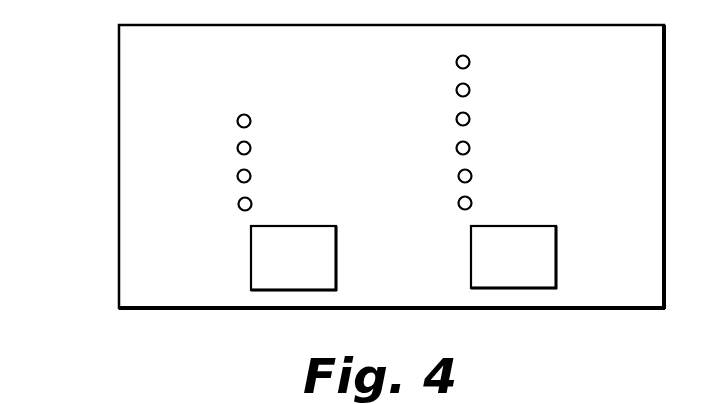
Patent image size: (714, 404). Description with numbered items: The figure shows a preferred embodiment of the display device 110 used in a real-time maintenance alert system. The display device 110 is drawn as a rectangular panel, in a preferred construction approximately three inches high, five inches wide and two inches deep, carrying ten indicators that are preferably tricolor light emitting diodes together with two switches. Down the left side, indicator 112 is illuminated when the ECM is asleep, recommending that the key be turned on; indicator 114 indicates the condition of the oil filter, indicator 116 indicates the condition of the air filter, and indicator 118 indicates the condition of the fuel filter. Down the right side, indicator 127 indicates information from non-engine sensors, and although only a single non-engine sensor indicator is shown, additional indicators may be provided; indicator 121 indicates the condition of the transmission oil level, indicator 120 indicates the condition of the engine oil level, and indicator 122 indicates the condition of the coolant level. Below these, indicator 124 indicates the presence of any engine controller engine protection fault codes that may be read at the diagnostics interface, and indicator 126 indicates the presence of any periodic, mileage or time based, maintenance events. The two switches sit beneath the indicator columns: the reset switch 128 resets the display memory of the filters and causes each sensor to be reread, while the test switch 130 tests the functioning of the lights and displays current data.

The display device 110 is at (119, 137).
The indicator 112 is at (237, 121).
The indicator 114 is at (237, 148).
The indicator 116 is at (237, 176).
The indicator 118 is at (238, 205).
The indicator 120 is at (456, 119).
The indicator 121 is at (456, 90).
The indicator 122 is at (456, 148).
The indicator 124 is at (458, 177).
The indicator 126 is at (458, 204).
The indicator 127 is at (456, 62).
The reset switch 128 is at (251, 242).
The test switch 130 is at (471, 240).